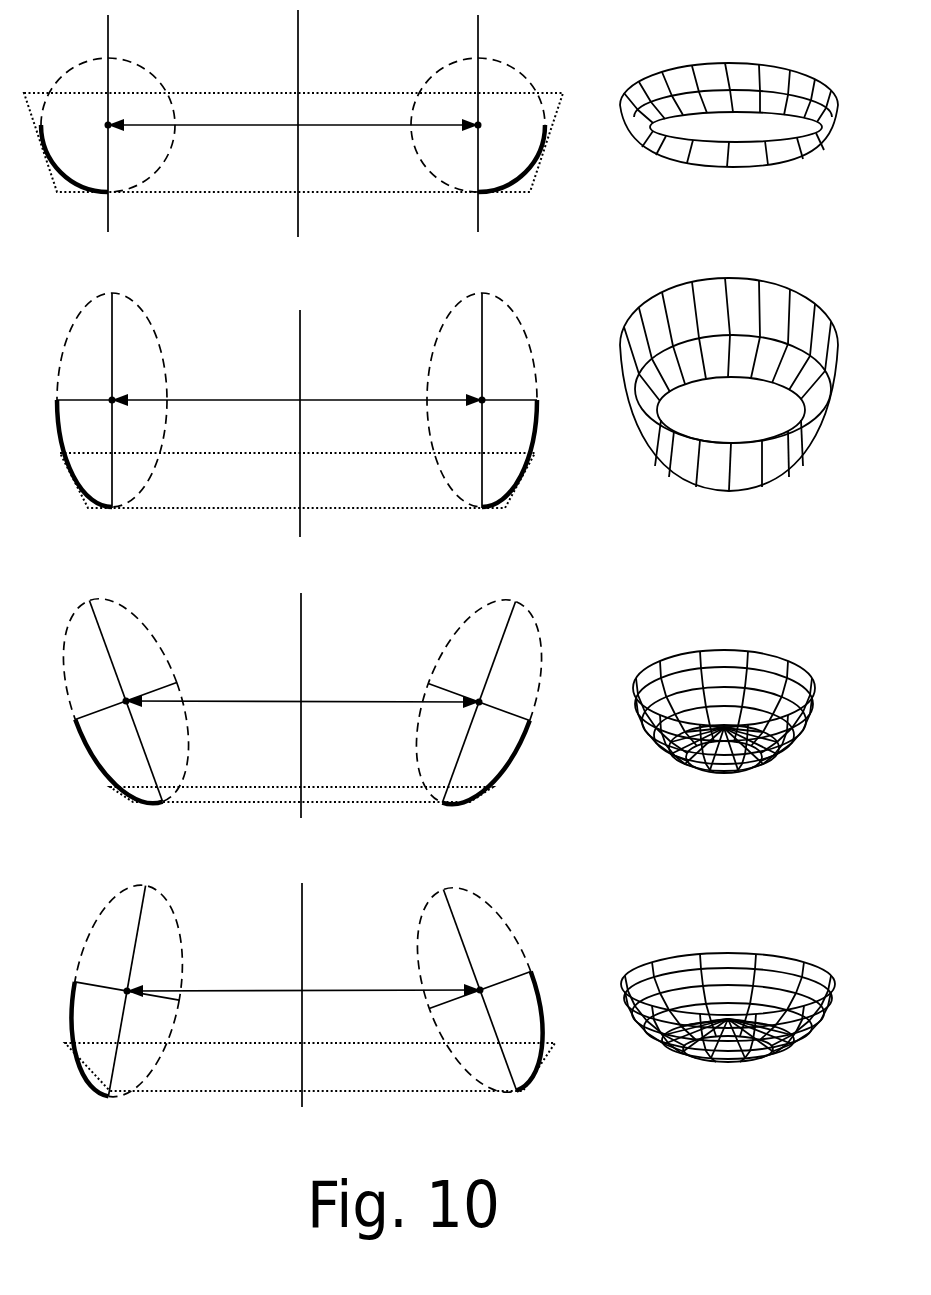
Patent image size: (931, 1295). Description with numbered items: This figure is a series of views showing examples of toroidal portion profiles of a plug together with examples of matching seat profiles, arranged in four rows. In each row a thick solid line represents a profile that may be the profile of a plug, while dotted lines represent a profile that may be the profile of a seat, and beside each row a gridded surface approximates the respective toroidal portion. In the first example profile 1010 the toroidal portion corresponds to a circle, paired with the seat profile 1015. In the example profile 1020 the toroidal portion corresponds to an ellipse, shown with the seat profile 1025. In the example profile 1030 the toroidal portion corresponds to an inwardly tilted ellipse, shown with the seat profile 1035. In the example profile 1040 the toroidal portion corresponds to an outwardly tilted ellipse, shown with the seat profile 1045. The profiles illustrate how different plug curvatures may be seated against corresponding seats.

The toroidal portion profile of a plug (circle) 1010 is at (262, 65).
The seat profile 1015 is at (535, 180).
The toroidal portion profile of a plug (ellipse) 1020 is at (262, 365).
The seat profile 1025 is at (510, 498).
The toroidal portion profile of a plug (inwardly tilted ellipse) 1030 is at (262, 660).
The seat profile 1035 is at (483, 788).
The toroidal portion profile of a plug (outwardly tilted ellipse) 1040 is at (262, 953).
The seat profile 1045 is at (540, 1060).